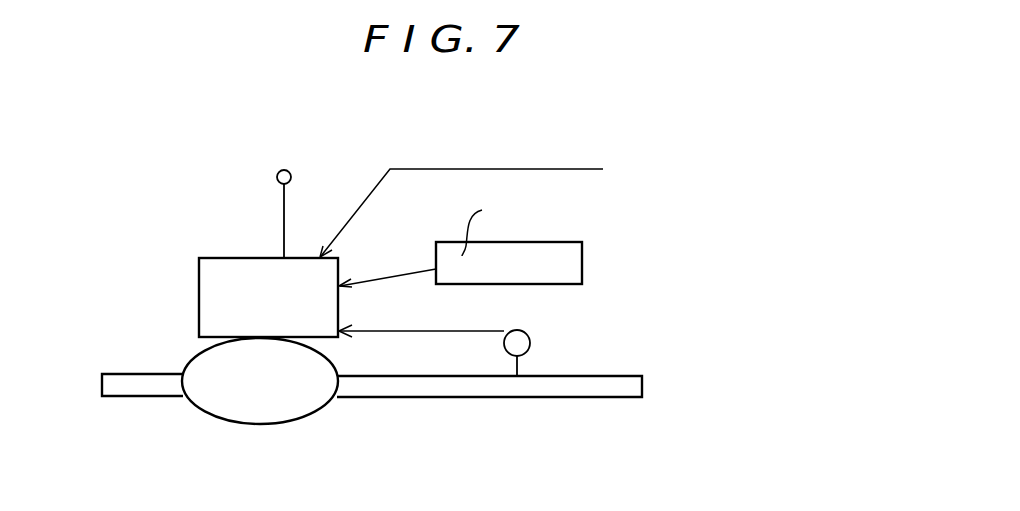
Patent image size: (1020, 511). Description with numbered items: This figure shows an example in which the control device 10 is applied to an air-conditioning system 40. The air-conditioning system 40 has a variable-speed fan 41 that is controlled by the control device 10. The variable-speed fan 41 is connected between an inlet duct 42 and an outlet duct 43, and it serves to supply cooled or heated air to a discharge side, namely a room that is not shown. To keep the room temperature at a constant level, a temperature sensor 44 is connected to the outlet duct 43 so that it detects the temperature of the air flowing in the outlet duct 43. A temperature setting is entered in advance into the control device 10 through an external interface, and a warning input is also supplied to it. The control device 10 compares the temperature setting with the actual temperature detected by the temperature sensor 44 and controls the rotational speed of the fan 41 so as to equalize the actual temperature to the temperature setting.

The control device 10 is at (213, 258).
The air-conditioning system 40 is at (672, 250).
The variable-speed fan 41 is at (213, 418).
The inlet duct 42 is at (128, 373).
The outlet duct 43 is at (565, 400).
The temperature sensor 44 is at (531, 334).